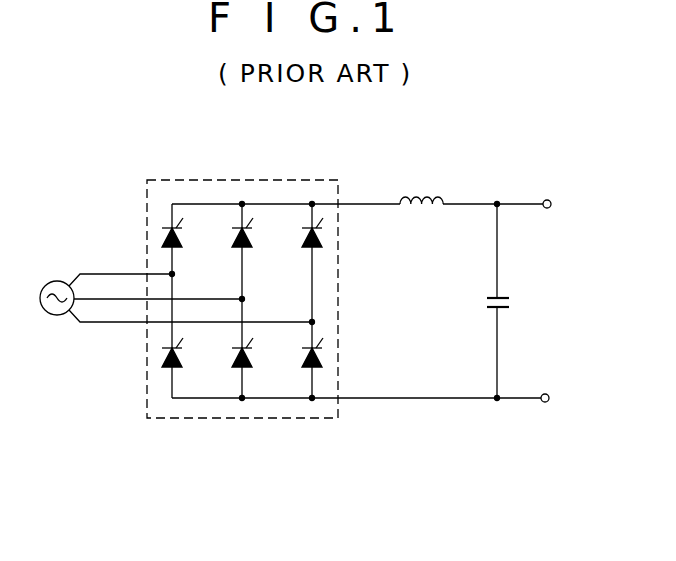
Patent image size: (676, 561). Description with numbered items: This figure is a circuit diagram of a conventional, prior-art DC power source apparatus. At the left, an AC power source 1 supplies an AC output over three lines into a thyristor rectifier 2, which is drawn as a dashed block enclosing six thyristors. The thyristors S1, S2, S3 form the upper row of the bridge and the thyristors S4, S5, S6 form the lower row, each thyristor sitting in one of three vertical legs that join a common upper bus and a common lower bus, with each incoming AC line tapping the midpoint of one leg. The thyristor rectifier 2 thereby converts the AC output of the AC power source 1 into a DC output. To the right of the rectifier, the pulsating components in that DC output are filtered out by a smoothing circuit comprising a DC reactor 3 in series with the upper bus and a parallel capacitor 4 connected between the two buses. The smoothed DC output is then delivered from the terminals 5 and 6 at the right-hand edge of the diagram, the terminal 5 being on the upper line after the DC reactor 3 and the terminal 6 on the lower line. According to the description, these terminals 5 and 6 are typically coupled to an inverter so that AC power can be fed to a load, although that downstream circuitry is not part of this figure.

The AC power source 1 is at (57, 315).
The thyristor rectifier 2 is at (338, 297).
The DC reactor 3 is at (421, 210).
The parallel capacitor 4 is at (481, 305).
The terminal 5 is at (551, 205).
The terminal 6 is at (549, 399).
The thyristor S1 is at (180, 238).
The thyristor S2 is at (250, 238).
The thyristor S3 is at (320, 238).
The thyristor S4 is at (180, 358).
The thyristor S5 is at (250, 358).
The thyristor S6 is at (320, 358).